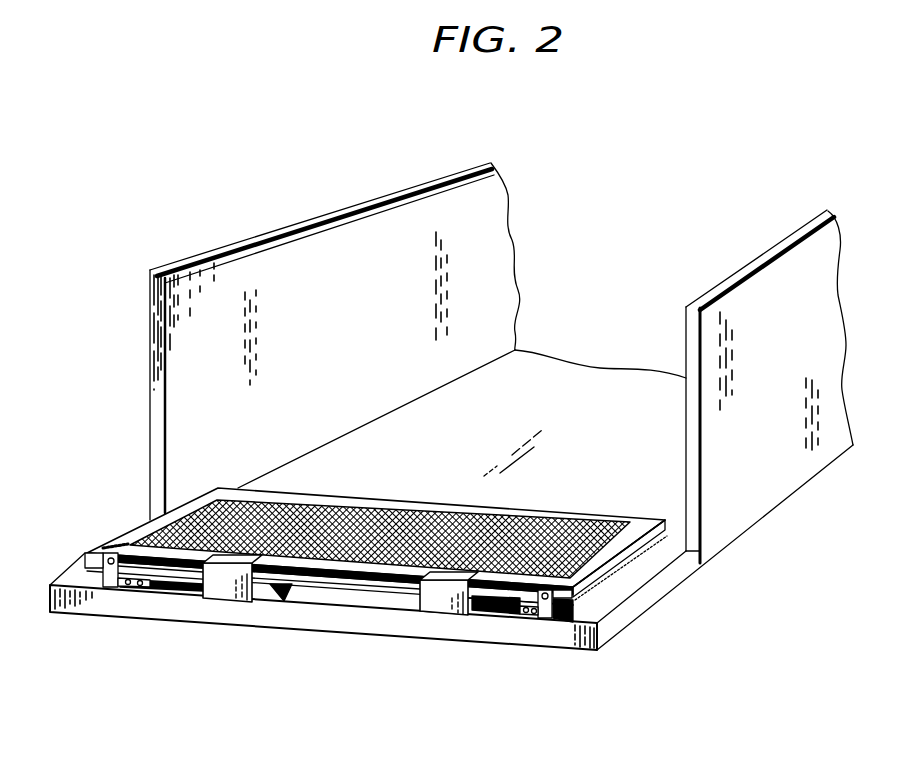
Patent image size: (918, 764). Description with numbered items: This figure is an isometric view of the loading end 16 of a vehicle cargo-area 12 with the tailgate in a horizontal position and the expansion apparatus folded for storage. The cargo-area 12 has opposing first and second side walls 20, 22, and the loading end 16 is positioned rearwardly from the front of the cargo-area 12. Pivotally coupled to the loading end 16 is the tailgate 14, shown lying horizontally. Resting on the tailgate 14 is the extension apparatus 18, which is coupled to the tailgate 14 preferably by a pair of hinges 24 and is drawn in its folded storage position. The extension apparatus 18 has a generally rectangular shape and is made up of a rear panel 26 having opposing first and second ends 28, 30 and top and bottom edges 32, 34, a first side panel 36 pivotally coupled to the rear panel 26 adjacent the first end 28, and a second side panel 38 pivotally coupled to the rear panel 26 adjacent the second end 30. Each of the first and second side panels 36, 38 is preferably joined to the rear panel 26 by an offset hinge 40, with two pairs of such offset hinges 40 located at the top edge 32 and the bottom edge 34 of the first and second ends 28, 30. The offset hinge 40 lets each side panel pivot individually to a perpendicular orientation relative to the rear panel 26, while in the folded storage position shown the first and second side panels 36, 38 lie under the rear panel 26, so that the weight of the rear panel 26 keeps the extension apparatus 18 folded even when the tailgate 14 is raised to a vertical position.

The cargo-area 12 is at (332, 174).
The tailgate 14 is at (599, 651).
The loading end 16 is at (672, 507).
The extension apparatus 18 is at (90, 543).
The first side wall 20 is at (227, 246).
The second side wall 22 is at (801, 225).
The hinges 24 is at (228, 588).
The rear panel 26 is at (360, 580).
The first end 28 is at (140, 525).
The second end 30 is at (607, 557).
The top edge 32 is at (414, 500).
The bottom edge 34 is at (165, 574).
The first side panel 36 is at (175, 590).
The second side panel 38 is at (495, 614).
The offset hinge 40 is at (112, 590).